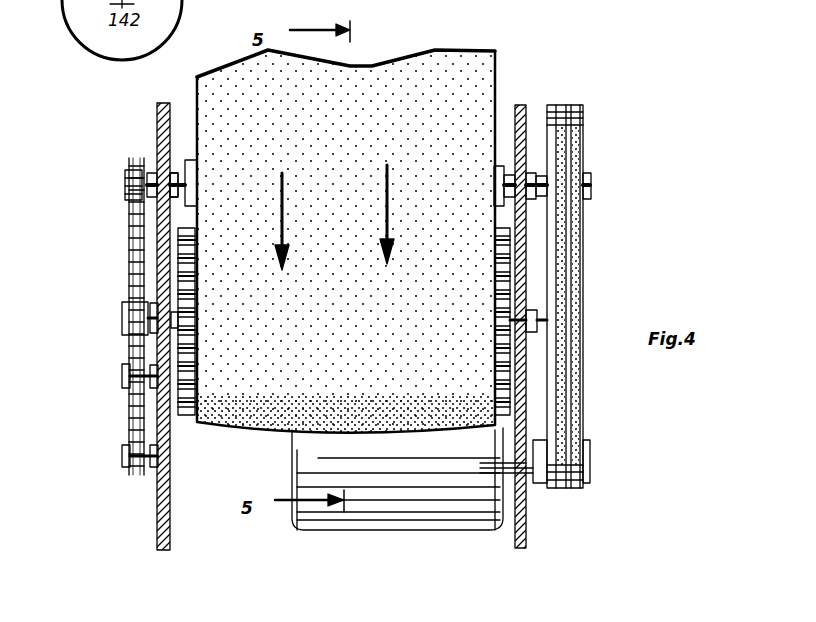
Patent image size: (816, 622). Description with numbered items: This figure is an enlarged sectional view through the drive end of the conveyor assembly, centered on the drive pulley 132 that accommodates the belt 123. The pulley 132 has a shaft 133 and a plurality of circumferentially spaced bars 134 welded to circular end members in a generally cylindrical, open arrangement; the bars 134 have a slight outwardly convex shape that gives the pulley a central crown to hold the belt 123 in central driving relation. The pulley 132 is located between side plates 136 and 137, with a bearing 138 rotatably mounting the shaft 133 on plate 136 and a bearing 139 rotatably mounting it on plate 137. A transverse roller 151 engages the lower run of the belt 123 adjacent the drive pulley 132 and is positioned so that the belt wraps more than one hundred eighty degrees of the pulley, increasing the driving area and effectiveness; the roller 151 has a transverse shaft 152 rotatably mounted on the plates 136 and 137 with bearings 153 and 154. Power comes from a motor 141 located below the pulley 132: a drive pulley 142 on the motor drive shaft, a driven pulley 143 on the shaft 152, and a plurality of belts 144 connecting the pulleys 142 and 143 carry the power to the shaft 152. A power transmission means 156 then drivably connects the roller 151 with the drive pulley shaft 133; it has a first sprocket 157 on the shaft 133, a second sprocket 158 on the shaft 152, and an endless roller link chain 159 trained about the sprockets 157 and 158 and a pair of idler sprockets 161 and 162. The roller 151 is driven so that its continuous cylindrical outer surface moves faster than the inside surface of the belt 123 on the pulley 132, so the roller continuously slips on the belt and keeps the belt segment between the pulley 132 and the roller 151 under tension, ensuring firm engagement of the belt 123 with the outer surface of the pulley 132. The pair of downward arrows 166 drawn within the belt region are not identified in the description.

The belt 123 is at (408, 62).
The drive pulley 132 is at (184, 415).
The shaft 133 is at (538, 322).
The bars 134 is at (496, 276).
The side plate 136 is at (524, 105).
The side plate 137 is at (157, 112).
The bearing 138 is at (158, 300).
The bearing 139 is at (512, 318).
The motor 141 is at (400, 520).
The drive pulley 142 is at (578, 482).
The driven pulley 143 is at (584, 128).
The belts 144 is at (568, 397).
The transverse roller 151 is at (195, 160).
The transverse shaft 152 is at (590, 188).
The bearing 153 is at (178, 172).
The bearing 154 is at (510, 172).
The power transmission means 156 is at (98, 185).
The first sprocket 157 is at (122, 312).
The second sprocket 158 is at (125, 180).
The endless roller link chain 159 is at (128, 202).
The idler sprocket 161 is at (122, 378).
The idler sprocket 162 is at (122, 456).
The flow direction arrows 166 is at (385, 232).